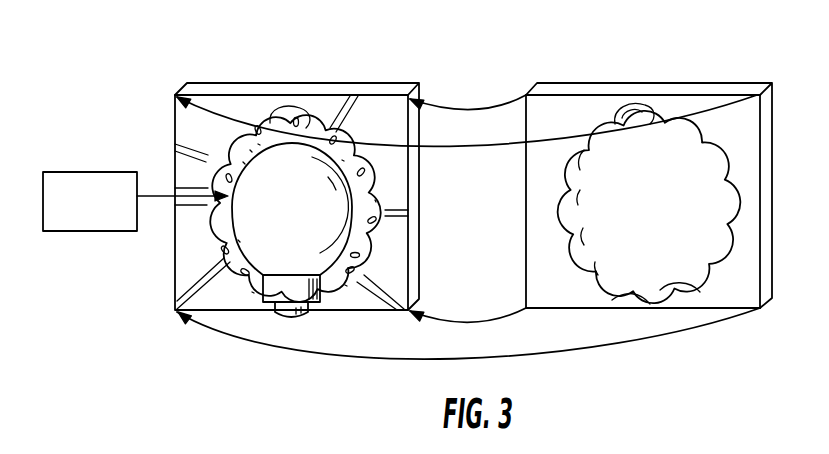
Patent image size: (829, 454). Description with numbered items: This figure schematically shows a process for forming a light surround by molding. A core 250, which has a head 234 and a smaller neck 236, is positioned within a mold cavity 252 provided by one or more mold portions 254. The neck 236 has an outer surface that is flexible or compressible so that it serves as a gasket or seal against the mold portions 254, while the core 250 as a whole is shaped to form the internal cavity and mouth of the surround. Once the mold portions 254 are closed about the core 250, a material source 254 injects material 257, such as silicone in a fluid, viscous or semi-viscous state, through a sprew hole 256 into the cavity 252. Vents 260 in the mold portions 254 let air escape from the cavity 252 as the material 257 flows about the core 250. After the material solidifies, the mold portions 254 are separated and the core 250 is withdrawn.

The head 234 is at (402, 250).
The neck 236 is at (288, 296).
The core 250 is at (307, 236).
The mold cavity 252 is at (215, 248).
The mold portions 254 is at (97, 172).
The sprew hole 256 is at (193, 187).
The material 257 is at (290, 137).
The vents 260 is at (192, 147).